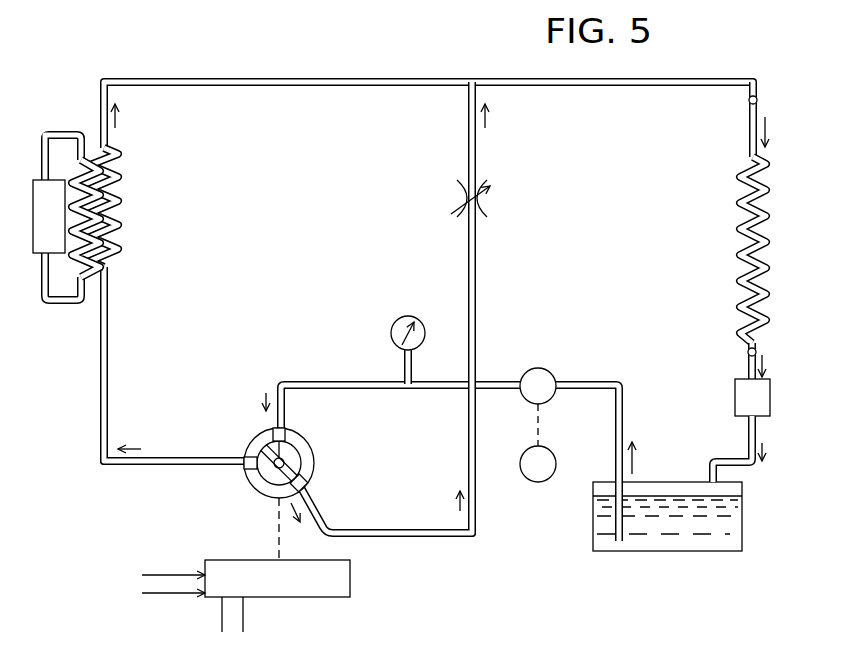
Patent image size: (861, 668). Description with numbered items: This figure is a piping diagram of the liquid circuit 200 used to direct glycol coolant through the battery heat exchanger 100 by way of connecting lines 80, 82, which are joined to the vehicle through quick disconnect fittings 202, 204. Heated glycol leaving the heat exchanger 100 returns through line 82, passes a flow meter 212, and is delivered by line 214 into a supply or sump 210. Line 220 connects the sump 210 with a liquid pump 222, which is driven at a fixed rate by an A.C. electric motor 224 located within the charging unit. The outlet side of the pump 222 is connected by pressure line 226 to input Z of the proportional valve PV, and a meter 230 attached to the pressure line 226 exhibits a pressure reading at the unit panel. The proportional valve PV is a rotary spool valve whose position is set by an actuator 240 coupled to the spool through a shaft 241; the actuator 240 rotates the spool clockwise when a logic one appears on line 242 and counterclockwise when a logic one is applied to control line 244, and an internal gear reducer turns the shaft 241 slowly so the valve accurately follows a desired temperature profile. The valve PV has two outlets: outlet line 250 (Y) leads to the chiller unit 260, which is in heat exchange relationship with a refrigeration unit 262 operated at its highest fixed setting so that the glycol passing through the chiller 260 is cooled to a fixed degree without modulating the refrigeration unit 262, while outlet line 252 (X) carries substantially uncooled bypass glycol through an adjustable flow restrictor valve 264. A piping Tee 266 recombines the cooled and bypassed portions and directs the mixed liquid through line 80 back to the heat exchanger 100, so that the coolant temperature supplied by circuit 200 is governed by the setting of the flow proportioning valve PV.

The liquid circuit 200 is at (410, 56).
The refrigeration unit 262 is at (59, 150).
The chiller unit 260 is at (118, 205).
The piping Tee 266 is at (472, 80).
The fitting 202 is at (756, 97).
The line 80 is at (750, 124).
The heat exchanger 100 is at (766, 205).
The adjustable flow restrictor valve 264 is at (478, 206).
The fitting 204 is at (760, 343).
The line 82 is at (748, 363).
The flow meter 212 is at (772, 396).
The line 214 is at (758, 442).
The supply or sump 210 is at (668, 481).
The line 220 is at (594, 381).
The liquid pump 222 is at (538, 368).
The electric motor 224 is at (552, 447).
The pressure line 226 is at (438, 380).
The meter 230 is at (390, 336).
The outlet line 250 is at (176, 456).
The outlet line 252 is at (372, 529).
The line 242 is at (187, 572).
The shaft 241 is at (278, 540).
The actuator 240 is at (350, 580).
The control line 244 is at (182, 600).
The proportional valve PV is at (318, 452).